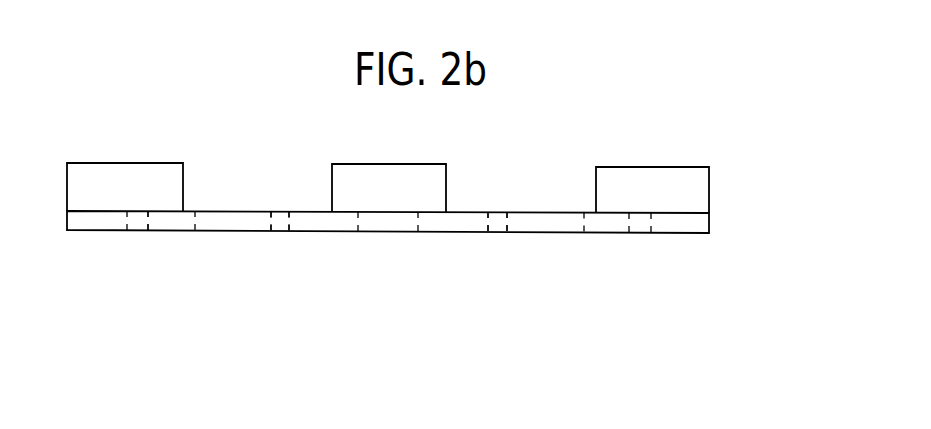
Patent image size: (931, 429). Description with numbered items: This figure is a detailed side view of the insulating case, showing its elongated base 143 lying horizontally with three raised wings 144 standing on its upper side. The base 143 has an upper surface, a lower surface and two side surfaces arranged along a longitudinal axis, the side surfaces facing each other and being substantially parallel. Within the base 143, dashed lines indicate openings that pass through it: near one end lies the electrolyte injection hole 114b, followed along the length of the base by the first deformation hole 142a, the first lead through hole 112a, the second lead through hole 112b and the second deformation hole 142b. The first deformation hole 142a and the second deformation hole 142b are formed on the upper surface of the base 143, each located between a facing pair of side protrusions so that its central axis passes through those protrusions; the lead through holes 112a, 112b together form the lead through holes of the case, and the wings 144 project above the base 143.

The base 143 is at (697, 223).
The wing 144 is at (693, 198).
The electrolyte injection hole 114b is at (135, 231).
The first deformation hole 142a is at (233, 231).
The first lead through hole 112a is at (325, 232).
The second lead through hole 112b is at (450, 232).
The second deformation hole 142b is at (548, 232).